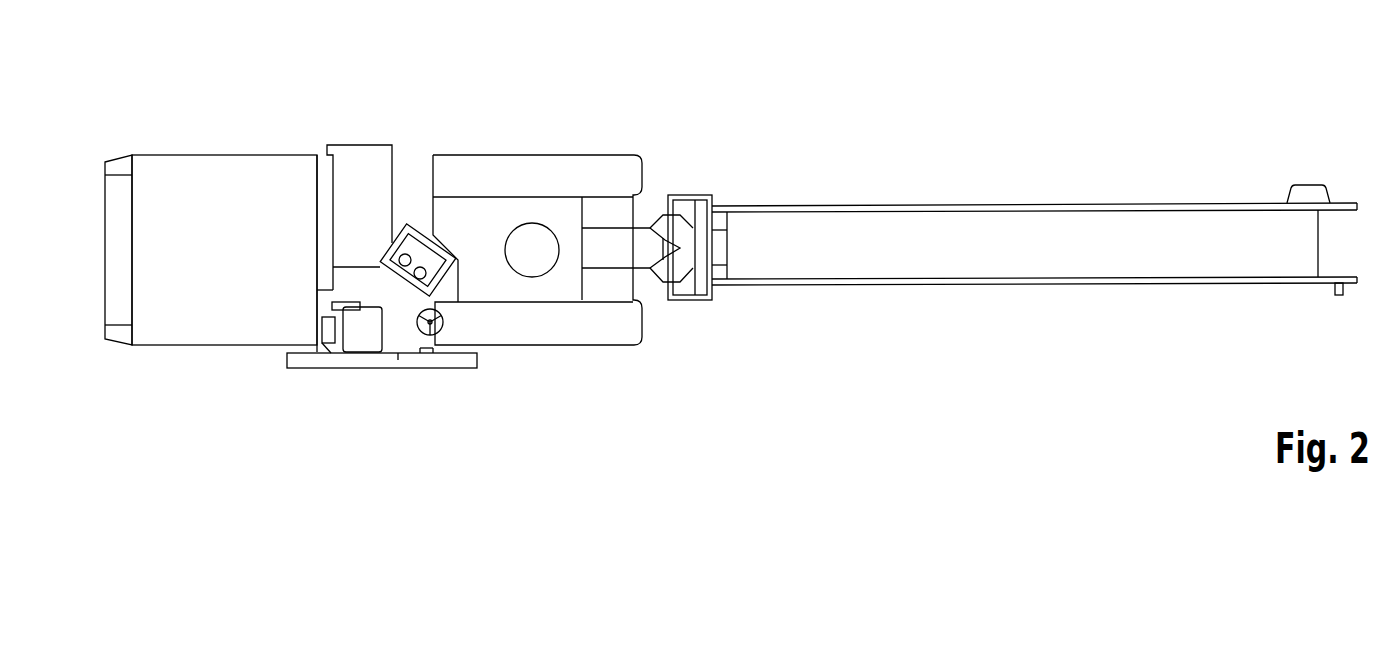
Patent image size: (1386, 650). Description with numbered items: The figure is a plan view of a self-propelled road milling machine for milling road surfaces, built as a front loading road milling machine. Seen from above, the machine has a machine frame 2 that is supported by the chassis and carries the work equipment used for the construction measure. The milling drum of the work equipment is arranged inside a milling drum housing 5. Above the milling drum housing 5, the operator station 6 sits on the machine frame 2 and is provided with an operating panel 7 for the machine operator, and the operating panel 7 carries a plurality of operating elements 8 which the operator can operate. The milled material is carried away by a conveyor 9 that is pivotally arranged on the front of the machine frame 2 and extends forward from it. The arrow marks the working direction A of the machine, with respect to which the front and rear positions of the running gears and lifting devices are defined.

The machine frame 2 is at (100, 212).
The milling drum housing 5 is at (357, 395).
The operator station 6 is at (448, 298).
The operating panel 7 is at (395, 290).
The operating elements 8 is at (420, 266).
The conveyor 9 is at (1012, 185).
The working direction A is at (475, 73).